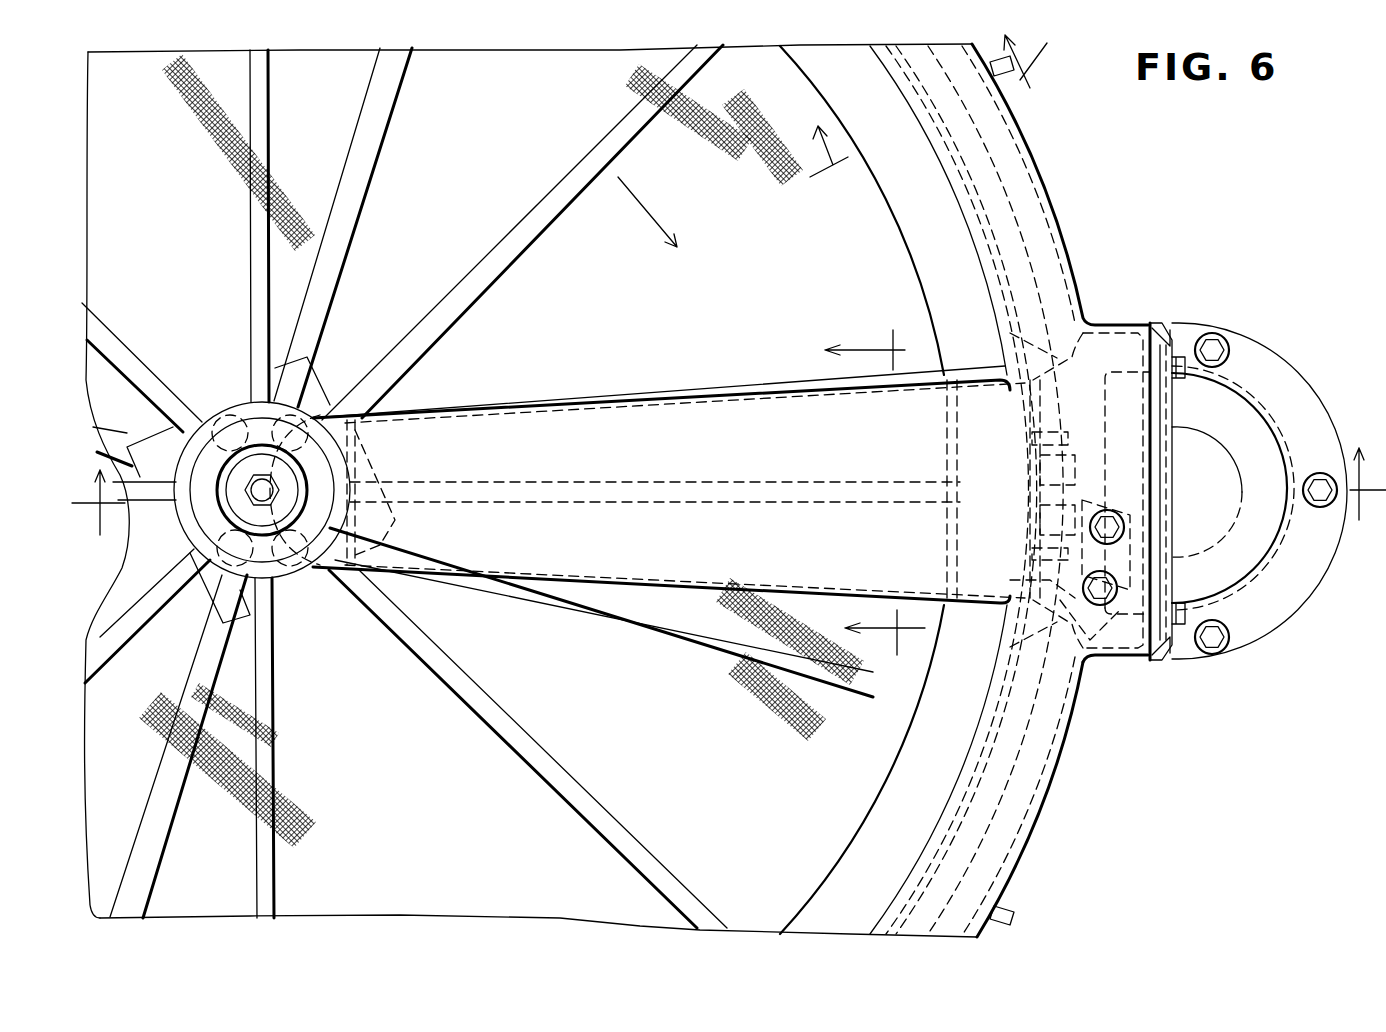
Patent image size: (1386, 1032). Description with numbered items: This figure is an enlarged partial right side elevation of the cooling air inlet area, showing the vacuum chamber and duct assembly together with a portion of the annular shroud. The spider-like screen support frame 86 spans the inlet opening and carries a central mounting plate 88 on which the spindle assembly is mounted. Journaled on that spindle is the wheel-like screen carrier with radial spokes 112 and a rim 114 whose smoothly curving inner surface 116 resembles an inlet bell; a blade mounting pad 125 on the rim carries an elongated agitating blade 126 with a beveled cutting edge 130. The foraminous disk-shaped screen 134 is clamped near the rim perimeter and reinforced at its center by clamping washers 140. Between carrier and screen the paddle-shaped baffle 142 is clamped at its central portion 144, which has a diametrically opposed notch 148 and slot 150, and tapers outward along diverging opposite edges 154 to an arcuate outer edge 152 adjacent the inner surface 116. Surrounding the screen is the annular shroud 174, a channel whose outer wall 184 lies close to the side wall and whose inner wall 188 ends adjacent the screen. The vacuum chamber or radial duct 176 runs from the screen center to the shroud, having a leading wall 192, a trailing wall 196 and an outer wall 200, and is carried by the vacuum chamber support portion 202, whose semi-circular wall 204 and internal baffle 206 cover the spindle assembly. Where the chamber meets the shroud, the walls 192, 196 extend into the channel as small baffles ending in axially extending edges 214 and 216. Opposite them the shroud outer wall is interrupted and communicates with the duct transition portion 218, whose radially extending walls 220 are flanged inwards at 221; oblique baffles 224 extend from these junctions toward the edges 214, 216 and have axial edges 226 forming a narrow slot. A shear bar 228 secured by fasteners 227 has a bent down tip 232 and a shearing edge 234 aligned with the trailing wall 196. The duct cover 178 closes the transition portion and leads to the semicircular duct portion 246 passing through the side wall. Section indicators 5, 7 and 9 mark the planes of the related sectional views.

The section line 5- 5 is at (729, 491).
The section line 7- 7 is at (928, 115).
The section line 9- 9 is at (875, 491).
The screen support frame 86 is at (628, 625).
The central mounting plate 88 is at (212, 592).
The radial spokes 112 is at (545, 222).
The rim 114 is at (830, 835).
The inner surface 116 is at (862, 490).
The blade mounting pad 125 is at (1030, 436).
The blade 126 is at (1035, 468).
The beveled cutting edge 130 is at (1030, 550).
The screen 134 is at (752, 734).
The clamping washers 140 is at (298, 405).
The baffle 142 is at (685, 380).
The central portion 144 is at (275, 555).
The notch 148 is at (180, 462).
The slot 150 is at (358, 462).
The arcuate outer edge 152 is at (1005, 428).
The diverging opposite edges 154 is at (727, 375).
The annular shroud 174 is at (1022, 490).
The vacuum chamber portion 176 is at (480, 370).
The duct cover 178 is at (1300, 352).
The outer wall 184 is at (1058, 222).
The inner wall 188 is at (985, 270).
The leading wall 192 is at (597, 385).
The trailing wall 196 is at (670, 588).
The outer wall 200 is at (661, 491).
The vacuum chamber support portion 202 is at (223, 400).
The semi-circular wall 204 is at (215, 522).
The internal baffle 206 is at (360, 436).
The edge 214 is at (1084, 370).
The edge 216 is at (1010, 645).
The duct transition portion 218 is at (1081, 493).
The walls 220 is at (1103, 323).
The inward flange 221 is at (1160, 345).
The oblique baffles 224 is at (1075, 348).
The edges 226 is at (1005, 345).
The fasteners 227 is at (1110, 590).
The shear bar 228 is at (1120, 497).
The bent down tip 232 is at (1170, 592).
The shearing edge 234 is at (1020, 580).
The duct portion 246 is at (1112, 405).